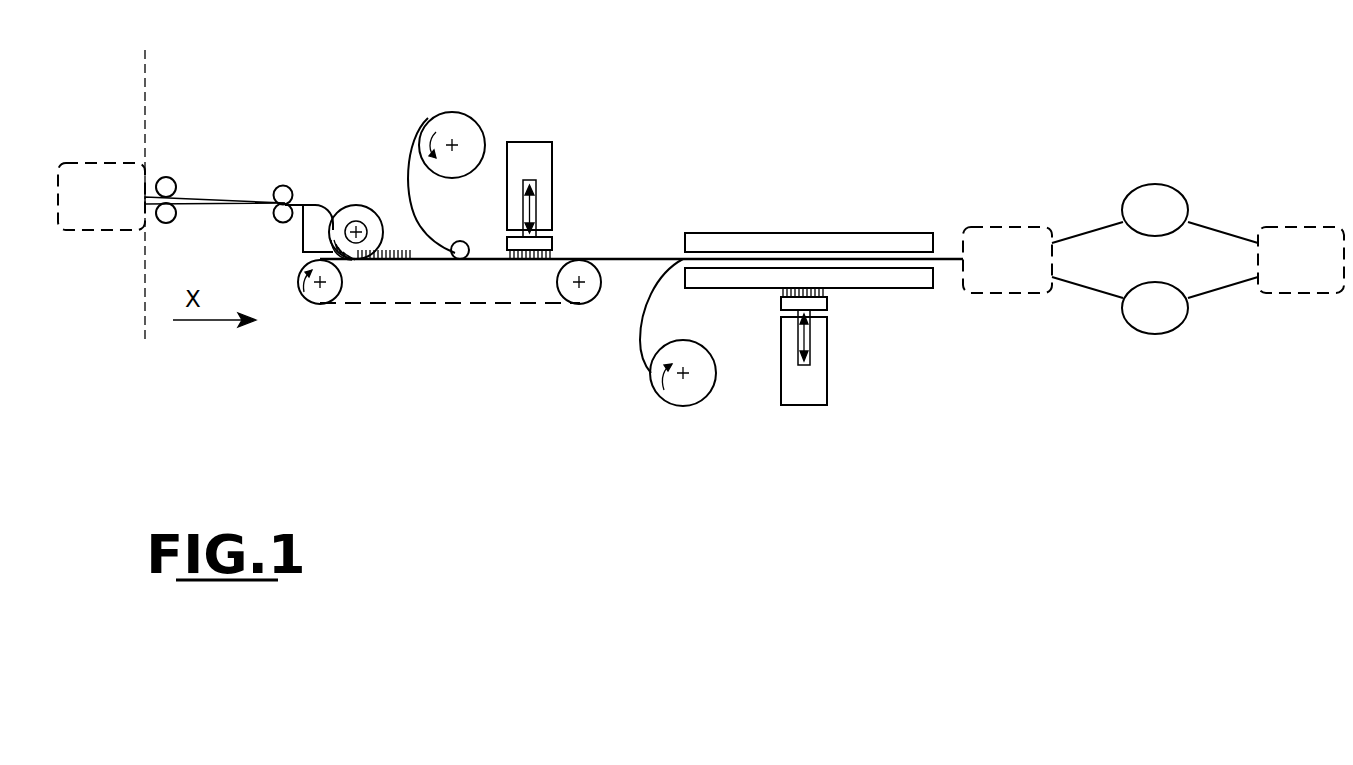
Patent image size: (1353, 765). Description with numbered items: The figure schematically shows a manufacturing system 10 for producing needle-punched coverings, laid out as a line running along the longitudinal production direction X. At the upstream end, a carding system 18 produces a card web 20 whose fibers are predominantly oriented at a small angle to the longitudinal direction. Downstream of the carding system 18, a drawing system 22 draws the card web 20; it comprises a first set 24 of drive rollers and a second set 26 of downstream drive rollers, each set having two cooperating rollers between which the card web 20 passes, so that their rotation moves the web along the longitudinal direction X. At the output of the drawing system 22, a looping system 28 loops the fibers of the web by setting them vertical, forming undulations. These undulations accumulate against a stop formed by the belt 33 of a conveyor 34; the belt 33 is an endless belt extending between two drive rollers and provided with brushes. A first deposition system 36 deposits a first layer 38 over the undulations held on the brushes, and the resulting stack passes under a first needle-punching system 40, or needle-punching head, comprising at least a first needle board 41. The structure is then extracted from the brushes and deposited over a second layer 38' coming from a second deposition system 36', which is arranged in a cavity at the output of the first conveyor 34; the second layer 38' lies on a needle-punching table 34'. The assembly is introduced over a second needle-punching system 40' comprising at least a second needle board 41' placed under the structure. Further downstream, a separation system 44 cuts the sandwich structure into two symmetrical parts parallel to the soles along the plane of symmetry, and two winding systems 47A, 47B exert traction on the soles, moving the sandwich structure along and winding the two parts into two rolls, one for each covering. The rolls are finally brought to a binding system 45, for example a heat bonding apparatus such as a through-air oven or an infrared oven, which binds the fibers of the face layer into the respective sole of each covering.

The manufacturing system 10 is at (258, 75).
The carding system 18 is at (84, 165).
The card web 20 is at (160, 224).
The drawing system 22 is at (235, 185).
The first set of drive rollers 24 is at (166, 177).
The second set of downstream drive rollers 26 is at (286, 184).
The looping system 28 is at (352, 203).
The belt 33 is at (453, 306).
The conveyor 34 is at (352, 311).
The first deposition system 36 is at (458, 121).
The first layer 38 is at (427, 182).
The first needle-punching system 40 is at (545, 178).
The first needle board 41 is at (552, 219).
The needle-punching table 34' is at (809, 229).
The second deposition system 36' is at (695, 394).
The second layer 38' is at (647, 338).
The second needle-punching system 40' is at (822, 372).
The second needle board 41' is at (824, 328).
The separation system 44 is at (1005, 240).
The binding system 45 is at (1296, 240).
The first winding system 47A is at (1157, 198).
The second winding system 47B is at (1157, 320).